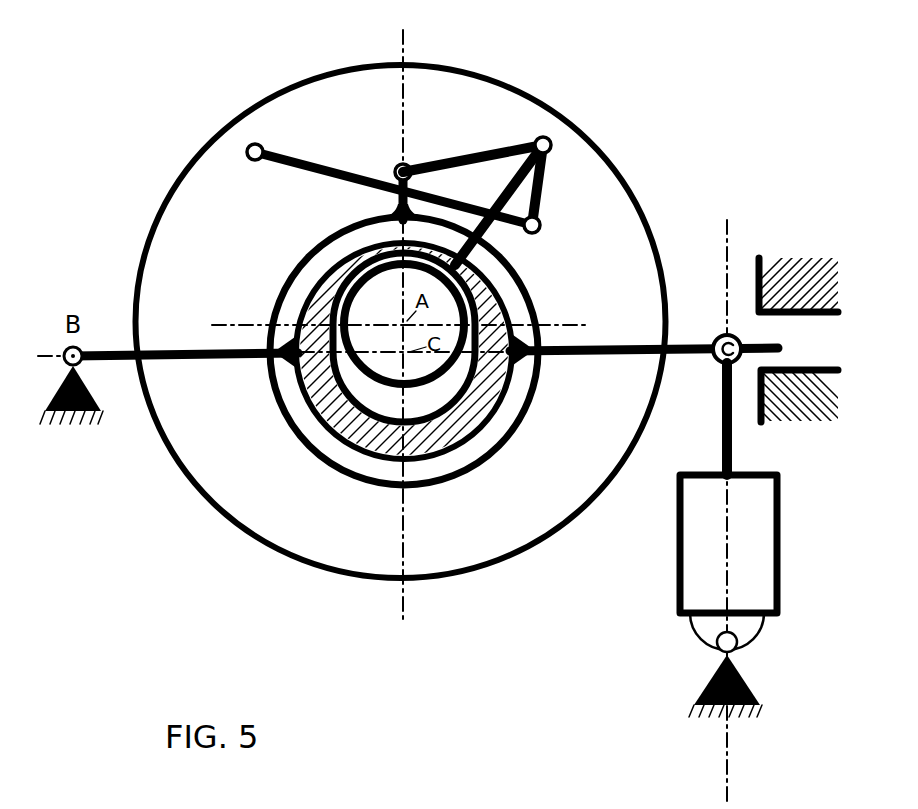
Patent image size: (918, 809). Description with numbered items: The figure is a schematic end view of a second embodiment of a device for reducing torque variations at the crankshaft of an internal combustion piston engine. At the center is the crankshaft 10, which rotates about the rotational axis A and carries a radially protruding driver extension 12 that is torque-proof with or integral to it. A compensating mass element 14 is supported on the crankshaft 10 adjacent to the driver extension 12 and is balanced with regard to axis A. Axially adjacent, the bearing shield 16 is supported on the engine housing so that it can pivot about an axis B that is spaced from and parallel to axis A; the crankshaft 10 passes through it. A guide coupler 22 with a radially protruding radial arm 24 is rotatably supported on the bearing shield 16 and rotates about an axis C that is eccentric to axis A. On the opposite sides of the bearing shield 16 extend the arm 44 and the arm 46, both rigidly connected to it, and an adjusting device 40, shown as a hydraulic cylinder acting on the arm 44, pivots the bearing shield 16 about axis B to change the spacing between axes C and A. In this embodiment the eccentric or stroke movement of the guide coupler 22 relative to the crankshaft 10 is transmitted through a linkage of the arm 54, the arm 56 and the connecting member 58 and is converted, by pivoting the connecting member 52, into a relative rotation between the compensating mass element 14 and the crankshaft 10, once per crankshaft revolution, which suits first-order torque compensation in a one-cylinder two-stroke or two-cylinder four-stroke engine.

The crankshaft 10 is at (408, 362).
The driver extension 12 is at (493, 229).
The compensating mass element 14 is at (493, 543).
The bearing shield 16 is at (328, 418).
The guide coupler 22 is at (293, 273).
The radial arm 24 is at (257, 146).
The adjusting device 40 is at (793, 515).
The arm 44 is at (586, 360).
The arm 46 is at (178, 362).
The connecting member 52 is at (568, 104).
The arm 54 is at (455, 158).
The arm 56 is at (545, 177).
The connecting member 58 is at (308, 160).